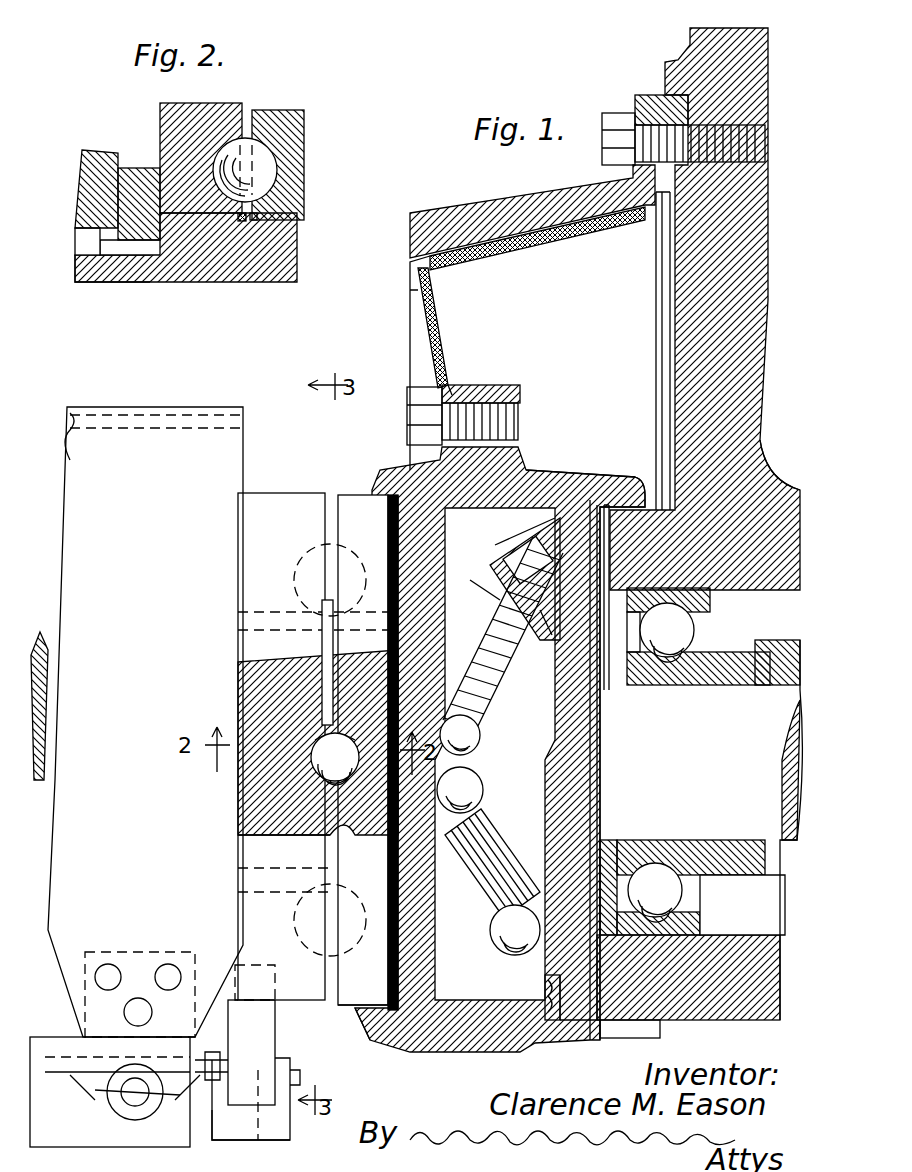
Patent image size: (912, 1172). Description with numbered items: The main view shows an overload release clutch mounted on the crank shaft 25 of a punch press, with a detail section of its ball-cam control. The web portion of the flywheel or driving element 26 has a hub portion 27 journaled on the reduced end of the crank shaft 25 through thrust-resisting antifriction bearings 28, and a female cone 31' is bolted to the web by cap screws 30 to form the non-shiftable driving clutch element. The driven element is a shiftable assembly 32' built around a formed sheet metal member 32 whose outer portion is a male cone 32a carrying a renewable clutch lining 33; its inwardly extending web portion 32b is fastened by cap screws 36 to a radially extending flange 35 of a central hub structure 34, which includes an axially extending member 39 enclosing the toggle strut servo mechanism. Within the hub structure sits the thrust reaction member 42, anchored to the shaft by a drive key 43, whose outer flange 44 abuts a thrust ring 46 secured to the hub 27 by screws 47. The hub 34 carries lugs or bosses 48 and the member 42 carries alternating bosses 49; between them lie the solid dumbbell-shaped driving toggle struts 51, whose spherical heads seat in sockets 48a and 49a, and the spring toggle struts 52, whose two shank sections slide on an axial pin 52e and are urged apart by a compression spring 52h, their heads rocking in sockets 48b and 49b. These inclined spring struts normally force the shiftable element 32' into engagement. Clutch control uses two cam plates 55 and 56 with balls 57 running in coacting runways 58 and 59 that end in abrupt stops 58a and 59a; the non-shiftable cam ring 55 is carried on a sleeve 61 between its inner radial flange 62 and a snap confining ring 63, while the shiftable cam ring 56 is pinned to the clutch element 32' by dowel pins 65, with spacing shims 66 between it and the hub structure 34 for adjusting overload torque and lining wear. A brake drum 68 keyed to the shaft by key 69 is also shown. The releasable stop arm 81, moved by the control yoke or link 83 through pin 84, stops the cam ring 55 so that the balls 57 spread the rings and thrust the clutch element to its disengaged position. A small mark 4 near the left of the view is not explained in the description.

In FIG. 1, the shaft 4 is at (58, 420).
In FIG. 2, the crank shaft 25 is at (110, 270).
In FIG. 1, the crank shaft 25 is at (52, 640).
In FIG. 1, the driving element 26 is at (712, 58).
In FIG. 1, the hub portion 27 is at (792, 485).
In FIG. 1, the thrust resisting antifriction bearings 28 is at (667, 652).
In FIG. 1, the cap screws 30 is at (618, 116).
In FIG. 1, the female cone 31' is at (532, 211).
In FIG. 1, the sheet metal member 32 is at (381, 363).
In FIG. 1, the shiftable clutch element 32' is at (385, 328).
In FIG. 1, the male cone 32a is at (548, 262).
In FIG. 1, the web portion 32b is at (445, 332).
In FIG. 1, the clutch lining 33 is at (630, 238).
In FIG. 1, the hub structure 34 is at (396, 472).
In FIG. 1, the flange 35 is at (490, 392).
In FIG. 1, the cap screws 36 is at (396, 425).
In FIG. 1, the axially extending member 39 is at (565, 482).
In FIG. 1, the thrust reaction member 42 is at (592, 698).
In FIG. 1, the drive key 43 is at (596, 720).
In FIG. 1, the flange 44 is at (553, 1022).
In FIG. 1, the thrust ring 46 is at (590, 1030).
In FIG. 1, the screws 47 is at (634, 1038).
In FIG. 1, the lugs or bosses 48 is at (592, 748).
In FIG. 1, the spherical socket 48a is at (458, 790).
In FIG. 1, the spherical socket 48b is at (455, 731).
In FIG. 1, the lugs or bosses 49 is at (592, 772).
In FIG. 1, the spherical socket 49a is at (515, 930).
In FIG. 1, the spherical socket 49b is at (525, 531).
In FIG. 1, the driving toggle struts 51 is at (495, 850).
In FIG. 1, the spring toggle struts 52 is at (503, 636).
In FIG. 1, the axial pin 52e is at (474, 588).
In FIG. 1, the compression spring 52h is at (538, 635).
In FIG. 2, the cam plate 55 is at (194, 118).
In FIG. 1, the cam plate 55 is at (270, 502).
In FIG. 2, the cam plate 56 is at (281, 118).
In FIG. 1, the cam plate 56 is at (363, 502).
In FIG. 2, the balls 57 is at (262, 165).
In FIG. 1, the balls 57 is at (300, 578).
In FIG. 1, the runway 58 is at (309, 662).
In FIG. 1, the end stop 58a is at (280, 828).
In FIG. 1, the runway 59 is at (318, 742).
In FIG. 1, the end stop 59a is at (340, 742).
In FIG. 2, the sleeve 61 is at (183, 232).
In FIG. 2, the inner radial flange 62 is at (134, 170).
In FIG. 2, the confining ring 63 is at (242, 222).
In FIG. 1, the dowel pins 65 is at (345, 1003).
In FIG. 1, the spacing shims 66 is at (356, 1012).
In FIG. 2, the brake drum 68 is at (82, 172).
In FIG. 2, the key 69 is at (80, 245).
In FIG. 1, the stop arm 81 is at (265, 1053).
In FIG. 1, the control yoke 83 is at (236, 1120).
In FIG. 1, the pin 84 is at (256, 1111).